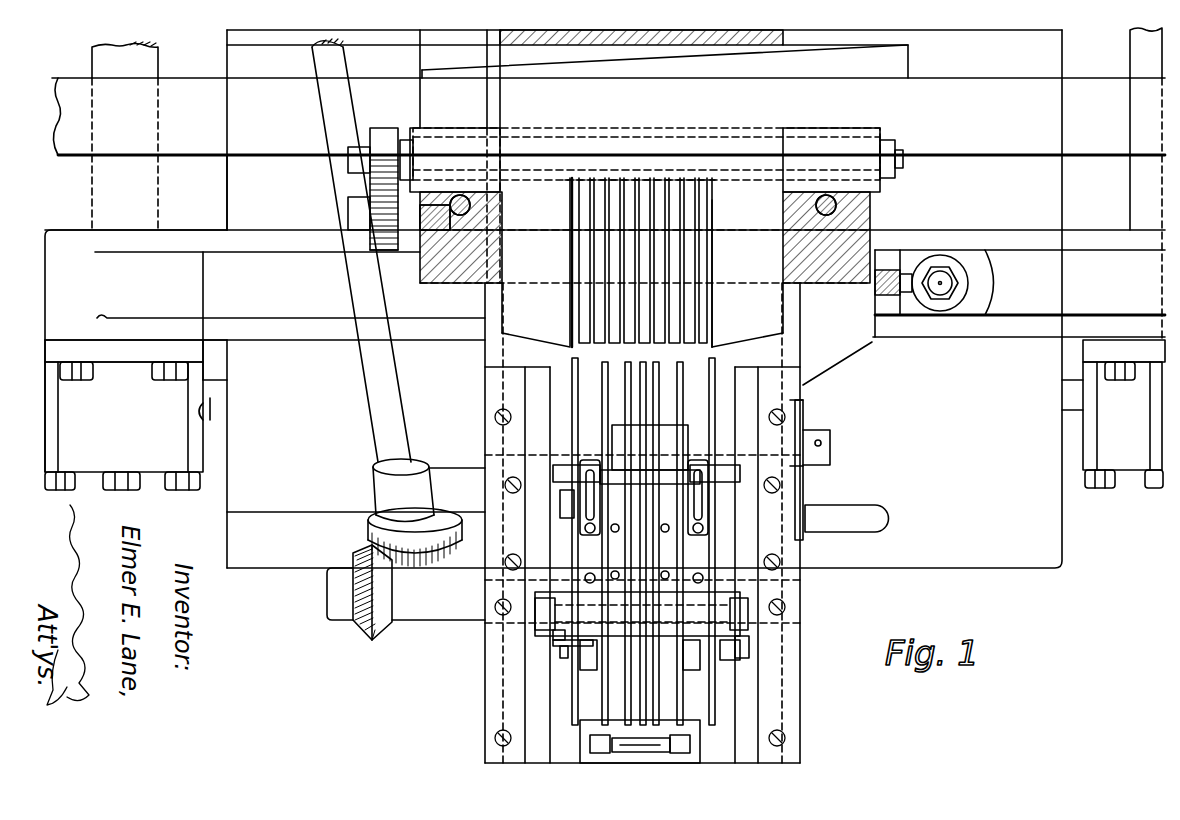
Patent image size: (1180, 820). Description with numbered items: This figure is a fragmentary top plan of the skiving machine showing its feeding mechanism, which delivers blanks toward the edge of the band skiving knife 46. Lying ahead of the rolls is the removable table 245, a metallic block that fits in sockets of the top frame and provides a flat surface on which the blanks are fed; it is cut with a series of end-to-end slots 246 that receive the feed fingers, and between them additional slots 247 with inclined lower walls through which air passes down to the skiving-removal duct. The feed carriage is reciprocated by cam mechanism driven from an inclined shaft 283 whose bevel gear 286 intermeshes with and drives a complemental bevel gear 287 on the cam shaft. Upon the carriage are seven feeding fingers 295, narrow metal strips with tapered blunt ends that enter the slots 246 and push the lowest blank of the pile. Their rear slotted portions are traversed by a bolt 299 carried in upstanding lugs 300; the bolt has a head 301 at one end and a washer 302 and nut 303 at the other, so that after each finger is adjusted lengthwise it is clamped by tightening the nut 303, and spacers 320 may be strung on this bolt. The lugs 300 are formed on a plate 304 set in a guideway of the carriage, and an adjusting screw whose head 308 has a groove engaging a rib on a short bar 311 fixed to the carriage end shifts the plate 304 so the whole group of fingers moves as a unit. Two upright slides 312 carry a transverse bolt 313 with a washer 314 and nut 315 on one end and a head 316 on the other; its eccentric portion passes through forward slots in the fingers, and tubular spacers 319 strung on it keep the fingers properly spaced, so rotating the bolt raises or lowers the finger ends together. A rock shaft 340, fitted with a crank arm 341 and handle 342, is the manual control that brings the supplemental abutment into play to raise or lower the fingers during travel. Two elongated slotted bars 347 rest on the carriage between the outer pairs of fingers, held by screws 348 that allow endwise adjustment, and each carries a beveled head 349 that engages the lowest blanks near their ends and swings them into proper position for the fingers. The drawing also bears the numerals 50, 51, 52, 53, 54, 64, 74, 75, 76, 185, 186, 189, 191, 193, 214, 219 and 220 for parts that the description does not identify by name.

The band skiving knife 46 is at (298, 143).
The left post 50 is at (140, 197).
The right post 51 is at (1140, 187).
The frame member 52 is at (290, 330).
The right frame bracket 53 is at (1133, 243).
The left frame bracket 54 is at (136, 360).
The bracket 64 is at (222, 418).
The nut 74 is at (950, 263).
The knurled block 75 is at (885, 265).
The washer 76 is at (913, 267).
The comb 185 is at (615, 165).
The shaft end cap 186 is at (897, 172).
The rail housing 189 is at (500, 163).
The gear 191 is at (383, 160).
The gear hub 193 is at (380, 252).
The carriage bar 214 is at (644, 130).
The inclined rail 219 is at (664, 57).
The rail 220 is at (694, 97).
The table 245 is at (645, 237).
The slots 246 is at (572, 303).
The additional slots 247 is at (572, 240).
The inclined shaft 283 is at (380, 385).
The bevel gear 286 is at (435, 562).
The complemental bevel gear 287 is at (385, 630).
The feeding fingers 295 is at (803, 388).
The bolt 299 is at (535, 615).
The upstanding lugs 300 is at (560, 648).
The head 301 is at (740, 598).
The washer 302 is at (550, 643).
The nut 303 is at (545, 634).
The plate 304 is at (660, 693).
The head of the screw 308 is at (660, 745).
The short bar 311 is at (660, 760).
The upright slides 312 is at (565, 468).
The bolt 313 is at (823, 488).
The washer 314 is at (800, 432).
The nut 315 is at (803, 465).
The head 316 is at (560, 505).
The tubular spacers 319 is at (668, 485).
The spacers 320 is at (668, 605).
The rock shaft 340 is at (705, 430).
The crank arm 341 is at (820, 462).
The handle 342 is at (890, 518).
The slotted bars 347 is at (585, 670).
The screws 348 is at (586, 530).
The head 349 is at (588, 425).